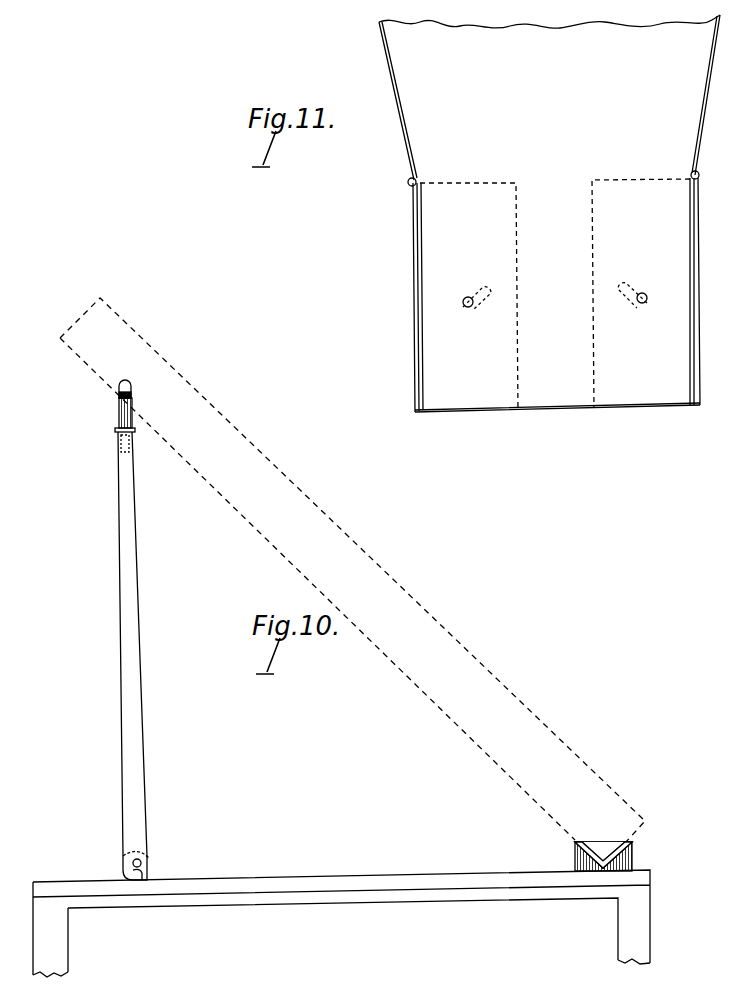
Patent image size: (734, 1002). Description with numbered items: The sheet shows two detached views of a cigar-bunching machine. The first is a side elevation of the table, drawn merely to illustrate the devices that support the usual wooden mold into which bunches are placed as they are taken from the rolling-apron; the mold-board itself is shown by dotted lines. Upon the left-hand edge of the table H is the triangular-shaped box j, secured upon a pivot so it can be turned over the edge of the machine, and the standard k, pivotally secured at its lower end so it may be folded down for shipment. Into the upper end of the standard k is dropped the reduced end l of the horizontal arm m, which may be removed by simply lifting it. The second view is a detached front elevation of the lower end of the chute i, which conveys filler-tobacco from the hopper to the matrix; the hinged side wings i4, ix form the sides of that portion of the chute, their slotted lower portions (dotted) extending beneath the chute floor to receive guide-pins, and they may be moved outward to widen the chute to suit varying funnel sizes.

In FIG. 11, the chute i is at (549, 213).
In FIG. 11, the hinged side wing i4 is at (409, 297).
In FIG. 11, the hinged side wing ix is at (701, 291).
In FIG. 10, the base frame H is at (354, 903).
In FIG. 10, the standard k is at (141, 676).
In FIG. 10, the horizontal arm m is at (133, 423).
In FIG. 10, the reduced end l is at (134, 448).
In FIG. 10, the triangular-shaped box j is at (572, 846).